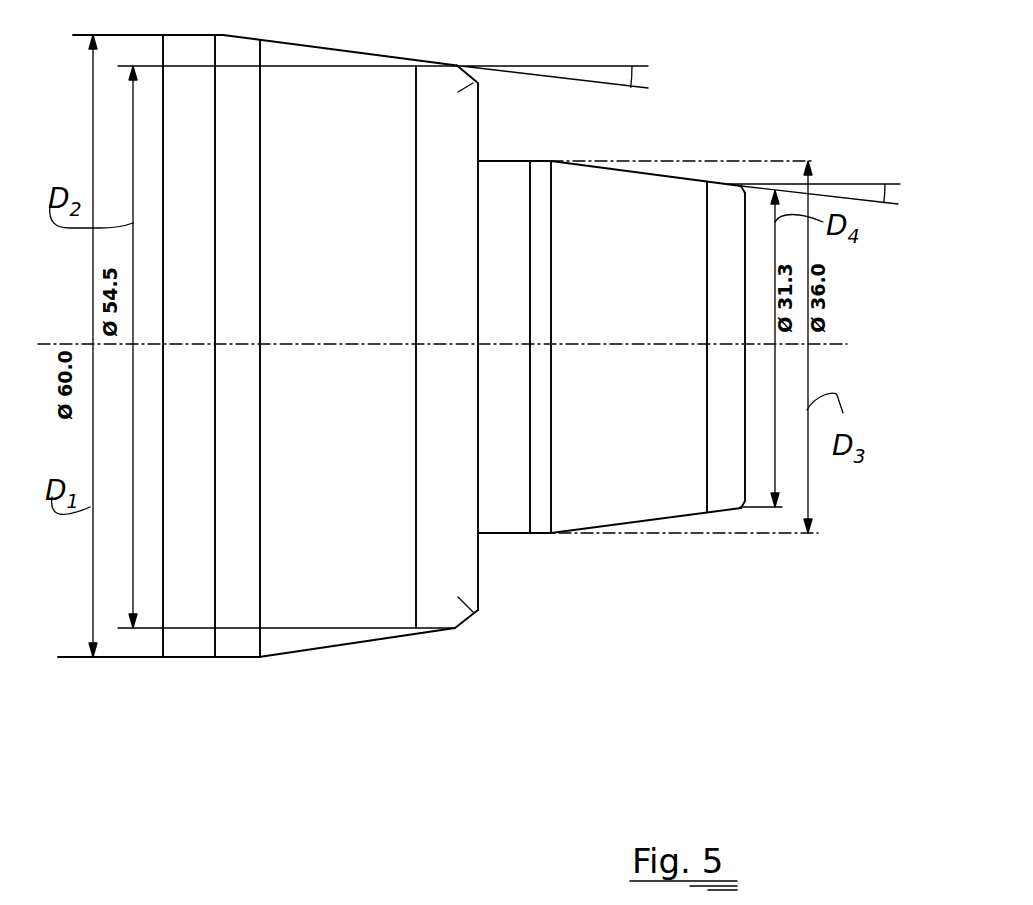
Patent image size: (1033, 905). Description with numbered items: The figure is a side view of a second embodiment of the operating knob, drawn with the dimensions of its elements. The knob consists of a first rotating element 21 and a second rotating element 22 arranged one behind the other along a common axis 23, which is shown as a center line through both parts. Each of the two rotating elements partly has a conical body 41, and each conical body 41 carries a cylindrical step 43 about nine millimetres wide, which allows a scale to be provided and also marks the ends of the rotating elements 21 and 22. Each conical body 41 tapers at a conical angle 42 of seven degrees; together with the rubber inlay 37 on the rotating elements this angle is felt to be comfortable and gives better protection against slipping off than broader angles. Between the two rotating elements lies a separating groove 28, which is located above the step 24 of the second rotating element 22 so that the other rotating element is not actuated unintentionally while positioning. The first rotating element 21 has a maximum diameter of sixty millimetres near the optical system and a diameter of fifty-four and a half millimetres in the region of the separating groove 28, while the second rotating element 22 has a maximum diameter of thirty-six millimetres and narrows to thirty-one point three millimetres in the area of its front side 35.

The first rotating element 21 is at (283, 657).
The second rotating element 22 is at (627, 528).
The axis 23 is at (833, 345).
The step 24 is at (480, 583).
The separating groove 28 is at (462, 97).
The front side 35 is at (745, 470).
The rubber inlay 37 is at (347, 425).
The conical body 41 is at (605, 190).
The conical angle 42 is at (577, 66).
The cylindrical step 43 is at (183, 637).